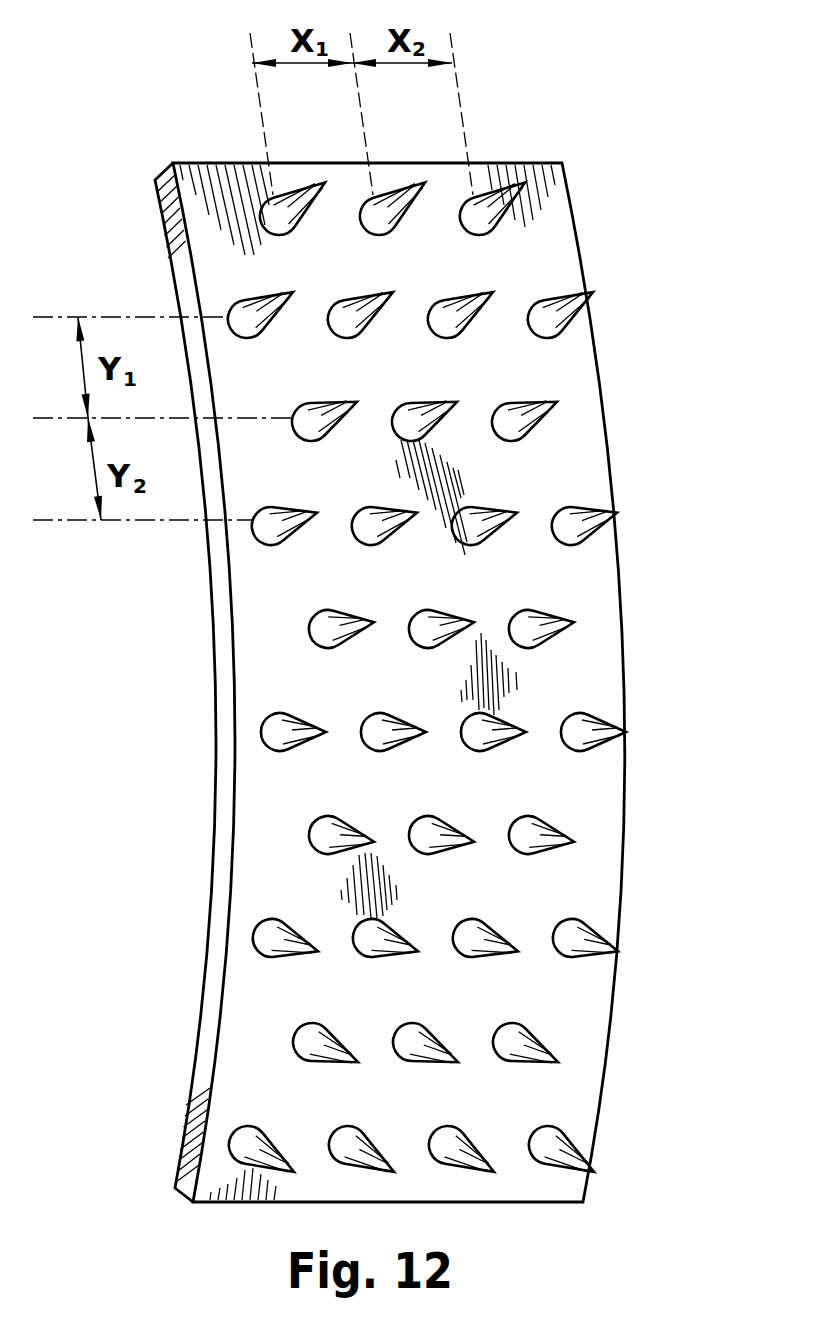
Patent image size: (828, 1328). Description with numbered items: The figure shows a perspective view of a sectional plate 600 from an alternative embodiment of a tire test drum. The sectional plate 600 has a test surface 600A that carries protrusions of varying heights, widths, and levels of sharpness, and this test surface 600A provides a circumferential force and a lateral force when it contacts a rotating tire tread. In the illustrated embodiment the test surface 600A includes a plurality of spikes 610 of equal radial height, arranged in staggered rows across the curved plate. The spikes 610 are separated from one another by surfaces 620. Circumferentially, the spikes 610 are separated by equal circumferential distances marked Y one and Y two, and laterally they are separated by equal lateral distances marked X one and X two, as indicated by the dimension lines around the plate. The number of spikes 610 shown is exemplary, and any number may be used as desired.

The sectional plate 600 is at (396, 622).
The test surface 600A is at (366, 522).
The spikes 610 is at (589, 289).
The surfaces 620 is at (527, 375).